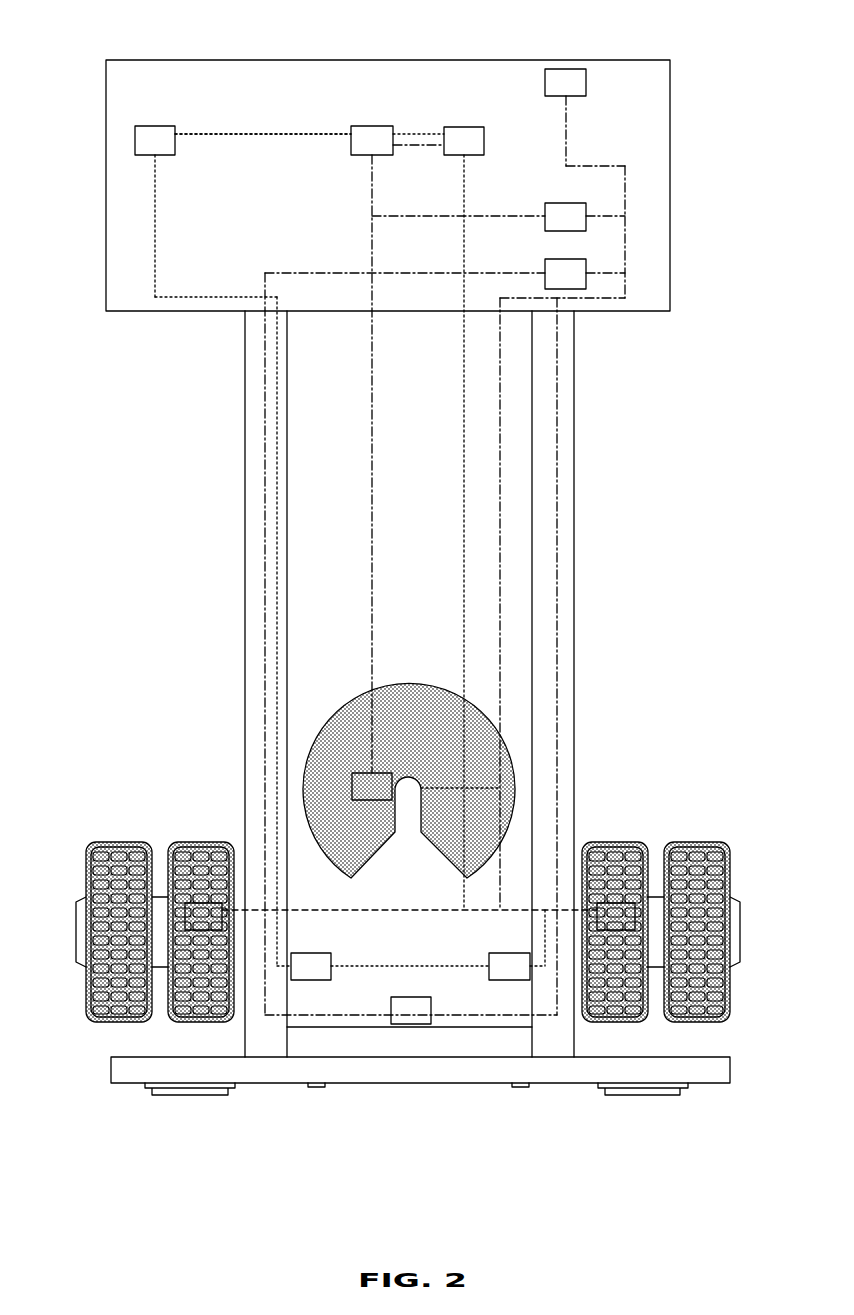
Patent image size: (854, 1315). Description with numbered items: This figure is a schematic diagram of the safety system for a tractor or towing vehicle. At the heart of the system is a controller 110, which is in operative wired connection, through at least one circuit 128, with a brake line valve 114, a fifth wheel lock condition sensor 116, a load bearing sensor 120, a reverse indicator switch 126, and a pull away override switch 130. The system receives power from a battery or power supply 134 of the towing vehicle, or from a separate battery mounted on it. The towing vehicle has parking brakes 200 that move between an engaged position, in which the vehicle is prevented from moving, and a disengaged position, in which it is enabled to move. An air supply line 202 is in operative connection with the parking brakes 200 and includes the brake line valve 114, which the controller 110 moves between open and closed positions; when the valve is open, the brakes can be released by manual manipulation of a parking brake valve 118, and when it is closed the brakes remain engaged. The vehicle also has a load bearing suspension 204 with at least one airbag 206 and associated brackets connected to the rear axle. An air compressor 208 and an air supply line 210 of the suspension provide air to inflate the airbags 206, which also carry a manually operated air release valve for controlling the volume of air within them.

The controller 110 is at (379, 111).
The brake line valve 114 is at (366, 126).
The fifth wheel lock condition sensor 116 is at (352, 785).
The parking brake valve 118 is at (464, 127).
The load bearing sensor 120 is at (408, 1024).
The reverse indicator switch 126 is at (586, 206).
The circuit 128 is at (557, 378).
The pull away override switch 130 is at (586, 262).
The power supply 134 is at (566, 69).
The parking brakes 200 is at (200, 903).
The air supply line 202 is at (250, 134).
The load bearing suspension 204 is at (300, 980).
The airbag 206 is at (404, 1047).
The air compressor 208 is at (135, 138).
The air supply line 210 is at (175, 298).